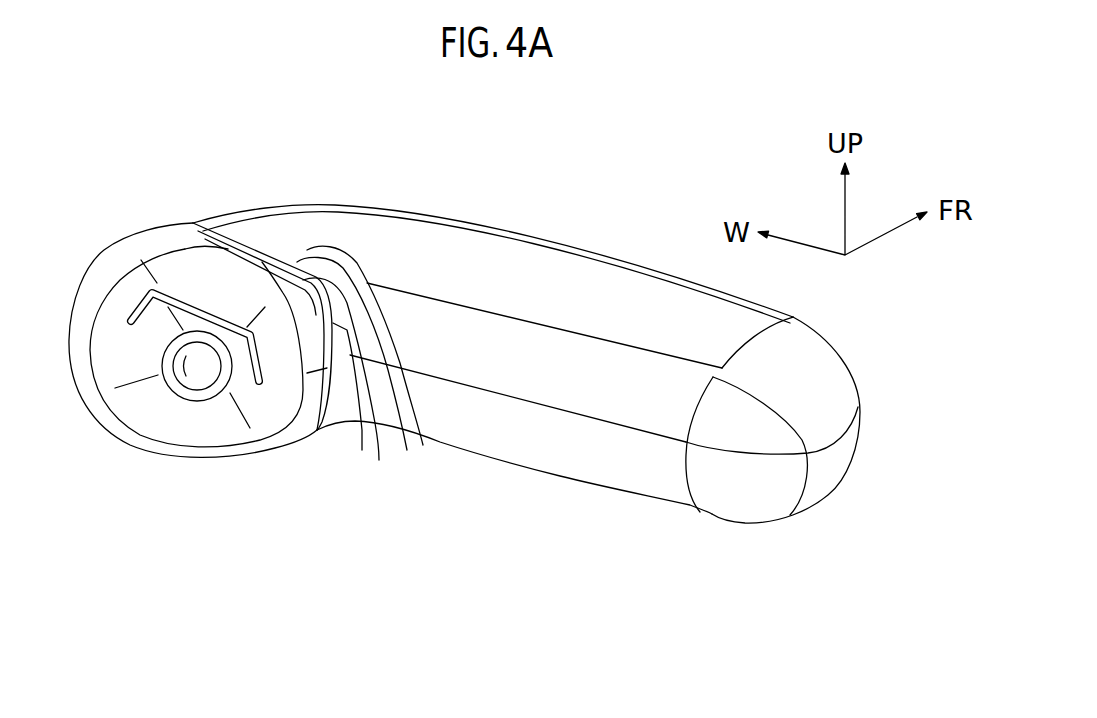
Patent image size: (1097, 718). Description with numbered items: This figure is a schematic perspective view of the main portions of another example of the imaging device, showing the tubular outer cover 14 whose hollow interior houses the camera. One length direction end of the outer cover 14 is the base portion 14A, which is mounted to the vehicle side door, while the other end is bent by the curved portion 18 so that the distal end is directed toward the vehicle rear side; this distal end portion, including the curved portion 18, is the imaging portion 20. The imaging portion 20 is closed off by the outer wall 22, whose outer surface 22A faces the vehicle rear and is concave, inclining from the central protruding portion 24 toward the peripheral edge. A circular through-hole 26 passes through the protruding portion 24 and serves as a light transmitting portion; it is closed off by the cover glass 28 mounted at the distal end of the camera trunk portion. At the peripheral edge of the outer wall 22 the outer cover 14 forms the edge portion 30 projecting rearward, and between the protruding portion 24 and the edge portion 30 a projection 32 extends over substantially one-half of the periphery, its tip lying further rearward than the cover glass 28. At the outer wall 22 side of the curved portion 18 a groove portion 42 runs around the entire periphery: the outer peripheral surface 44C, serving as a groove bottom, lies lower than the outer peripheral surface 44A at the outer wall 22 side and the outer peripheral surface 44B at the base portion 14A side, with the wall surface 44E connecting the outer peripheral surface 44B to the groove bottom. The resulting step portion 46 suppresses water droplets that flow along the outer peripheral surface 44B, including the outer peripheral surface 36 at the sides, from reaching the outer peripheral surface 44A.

The outer cover 14 is at (553, 240).
The base portion 14A is at (823, 412).
The curved portion 18 is at (381, 222).
The imaging portion 20 is at (307, 243).
The outer wall 22 is at (124, 364).
The outer surface 22A is at (110, 323).
The protruding portion 24 is at (207, 401).
The through-hole 26 is at (194, 380).
The cover glass 28 is at (169, 435).
The edge portion 30 is at (250, 447).
The projection 32 is at (140, 302).
The outer peripheral surface 36 is at (460, 434).
The groove portion 42 is at (573, 490).
The outer peripheral surface 44A is at (379, 460).
The outer peripheral surface 44B is at (423, 445).
The outer peripheral surface 44C is at (362, 450).
The wall surface 44E is at (407, 450).
The step portion 46 is at (514, 553).